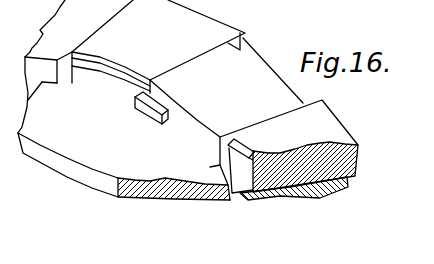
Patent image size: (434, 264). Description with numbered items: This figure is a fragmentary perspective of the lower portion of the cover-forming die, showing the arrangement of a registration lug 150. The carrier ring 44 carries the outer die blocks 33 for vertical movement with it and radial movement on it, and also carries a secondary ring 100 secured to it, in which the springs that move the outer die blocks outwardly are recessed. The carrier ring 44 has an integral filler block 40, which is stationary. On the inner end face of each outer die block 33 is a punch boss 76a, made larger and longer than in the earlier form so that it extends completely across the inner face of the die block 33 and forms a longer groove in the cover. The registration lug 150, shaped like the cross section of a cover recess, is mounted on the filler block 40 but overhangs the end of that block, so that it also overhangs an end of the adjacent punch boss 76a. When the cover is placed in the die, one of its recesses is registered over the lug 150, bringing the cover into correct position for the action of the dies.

The filler block 40 is at (164, 51).
The outer die block 33 is at (243, 98).
The punch boss 76a is at (95, 70).
The registration lug 150 is at (145, 107).
The secondary ring 100 is at (139, 130).
The carrier ring 44 is at (348, 183).